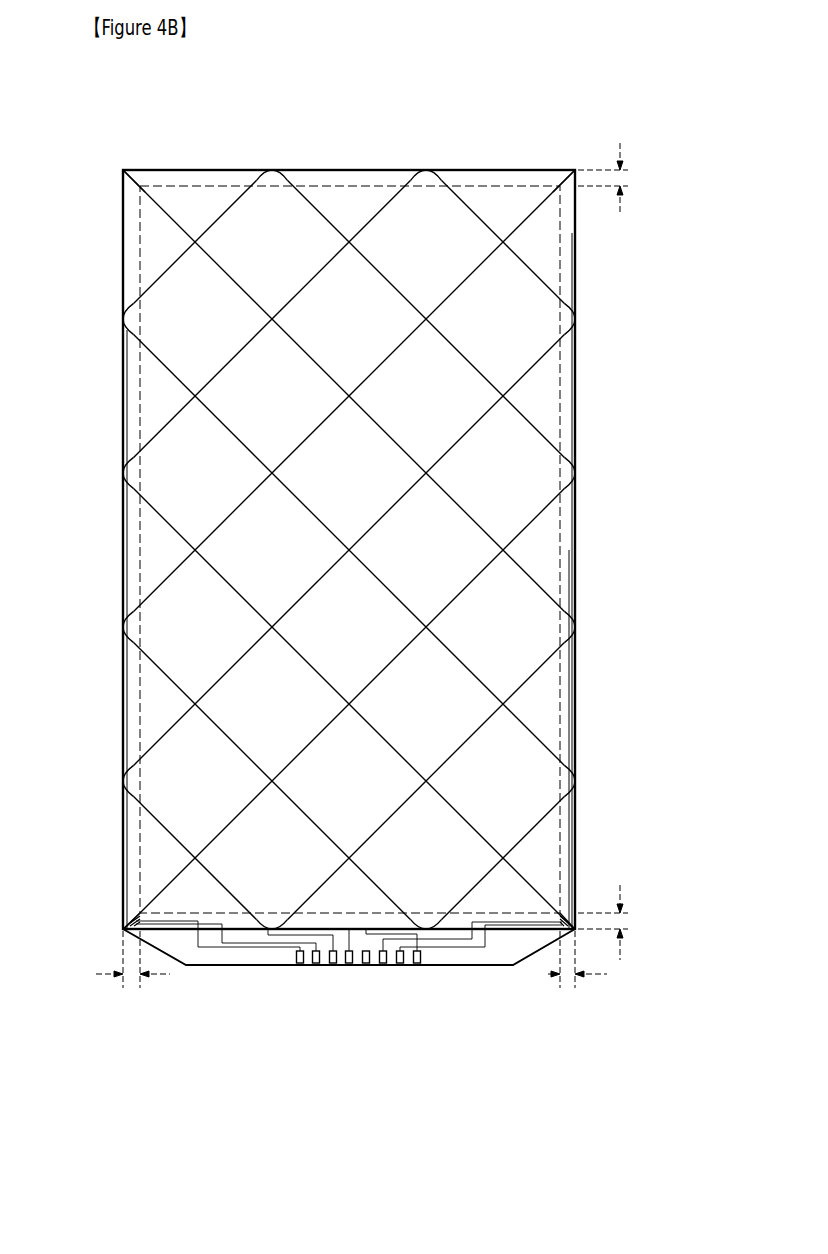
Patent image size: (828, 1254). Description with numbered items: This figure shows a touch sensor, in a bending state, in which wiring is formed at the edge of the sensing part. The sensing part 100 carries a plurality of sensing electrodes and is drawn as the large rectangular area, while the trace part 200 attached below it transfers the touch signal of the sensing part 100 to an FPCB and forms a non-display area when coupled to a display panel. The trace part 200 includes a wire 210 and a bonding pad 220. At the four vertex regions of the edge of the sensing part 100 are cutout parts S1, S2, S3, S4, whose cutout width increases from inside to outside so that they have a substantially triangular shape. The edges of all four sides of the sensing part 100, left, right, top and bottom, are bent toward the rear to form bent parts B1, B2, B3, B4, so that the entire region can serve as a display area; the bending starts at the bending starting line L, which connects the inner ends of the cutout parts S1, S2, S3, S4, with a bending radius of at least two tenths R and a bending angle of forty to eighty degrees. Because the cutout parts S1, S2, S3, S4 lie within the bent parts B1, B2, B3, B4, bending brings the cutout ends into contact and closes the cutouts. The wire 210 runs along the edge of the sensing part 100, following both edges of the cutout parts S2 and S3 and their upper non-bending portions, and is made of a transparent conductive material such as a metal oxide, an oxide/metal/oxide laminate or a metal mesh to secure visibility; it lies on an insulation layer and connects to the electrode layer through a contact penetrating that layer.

The sensing part 100 is at (351, 169).
The trace part 200 is at (481, 967).
The wire 210 is at (437, 945).
The bonding pad 220 is at (349, 964).
The cutout part S1 is at (139, 168).
The cutout part S2 is at (123, 925).
The cutout part S3 is at (575, 925).
The cutout part S4 is at (562, 168).
The bent part B1 is at (133, 971).
The bent part B2 is at (577, 971).
The bent part B3 is at (616, 179).
The bent part B4 is at (615, 922).
The bending starting line L is at (562, 273).